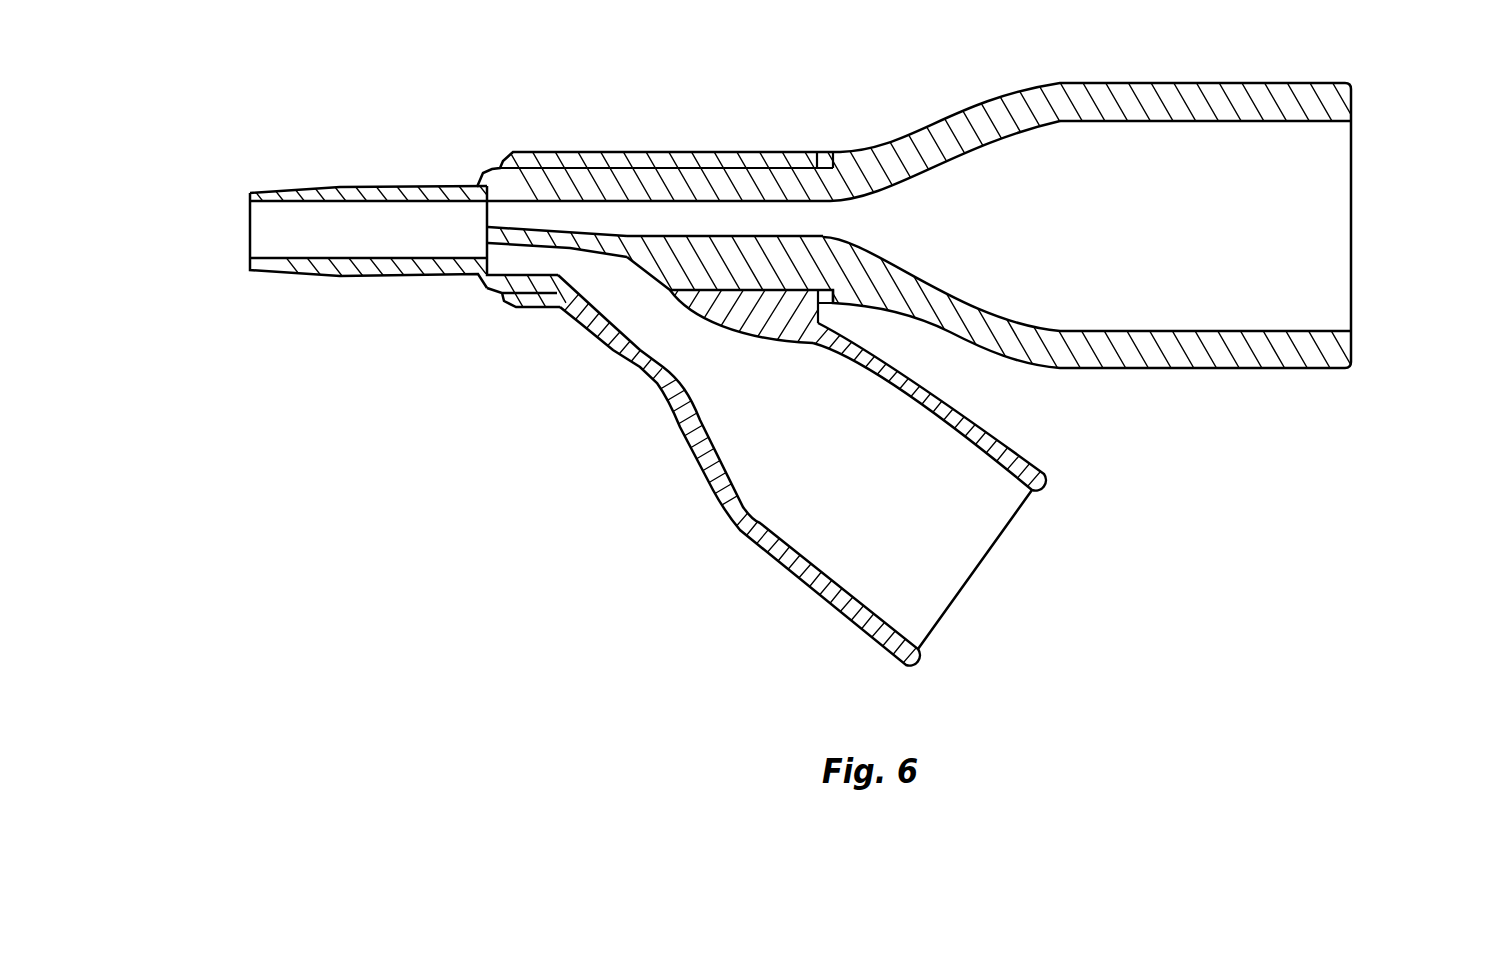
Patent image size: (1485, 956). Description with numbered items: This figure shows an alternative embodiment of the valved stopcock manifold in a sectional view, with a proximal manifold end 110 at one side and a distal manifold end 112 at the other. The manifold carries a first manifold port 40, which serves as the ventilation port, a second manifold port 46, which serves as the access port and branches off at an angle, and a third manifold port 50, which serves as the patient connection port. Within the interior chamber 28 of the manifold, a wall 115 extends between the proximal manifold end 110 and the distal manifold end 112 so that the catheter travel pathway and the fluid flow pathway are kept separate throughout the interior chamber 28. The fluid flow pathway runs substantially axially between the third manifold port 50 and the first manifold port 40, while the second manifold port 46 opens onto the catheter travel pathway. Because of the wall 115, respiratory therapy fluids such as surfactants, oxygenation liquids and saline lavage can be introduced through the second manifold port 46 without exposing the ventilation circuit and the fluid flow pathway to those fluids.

The open interior 28 is at (620, 228).
The first manifold port 40 is at (1352, 152).
The second manifold port 46 is at (913, 622).
The third manifold port 50 is at (238, 218).
The proximal manifold end 110 is at (1350, 406).
The distal manifold end 112 is at (325, 338).
The wall 115 is at (563, 240).